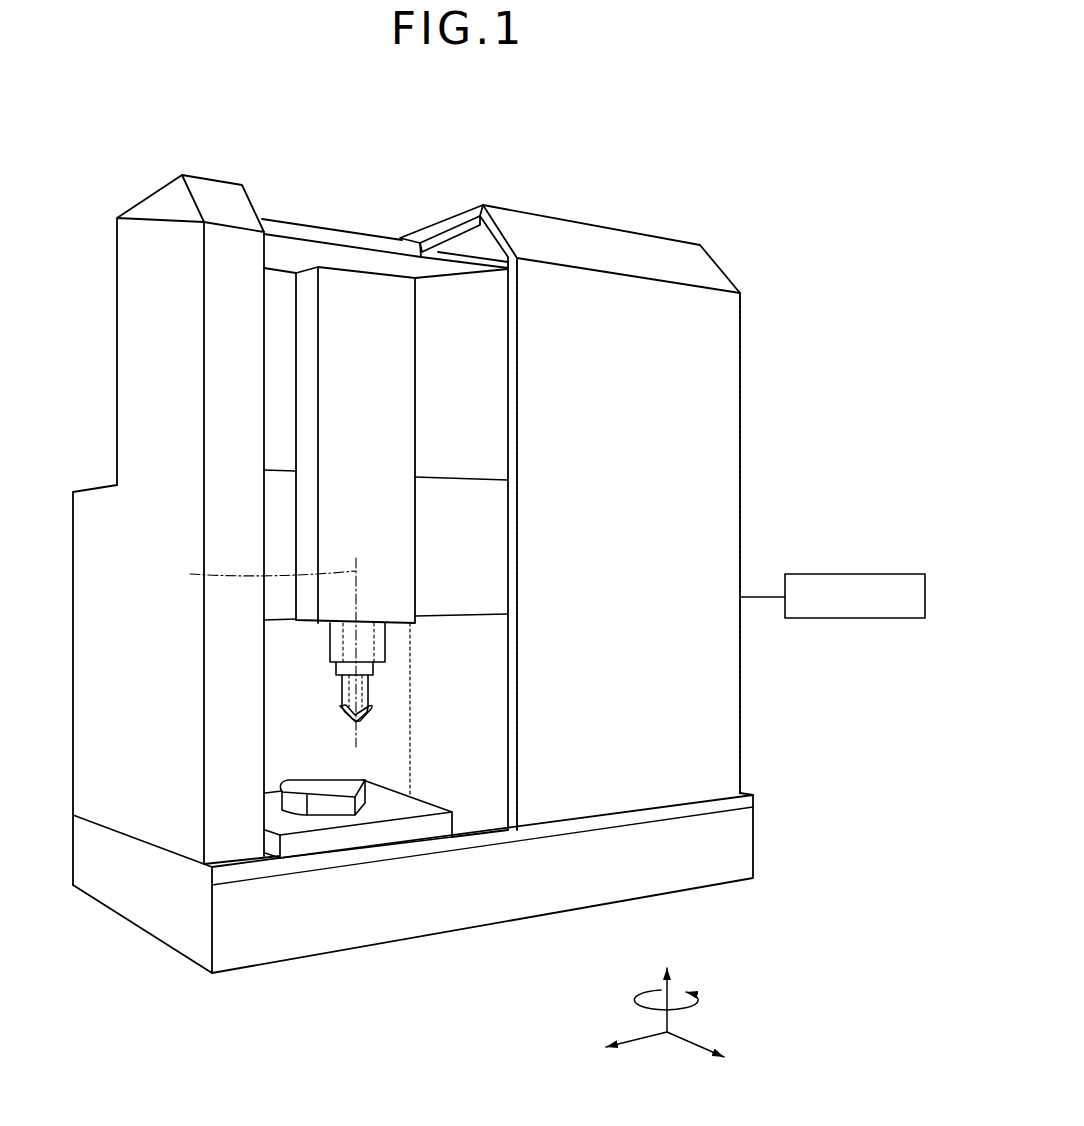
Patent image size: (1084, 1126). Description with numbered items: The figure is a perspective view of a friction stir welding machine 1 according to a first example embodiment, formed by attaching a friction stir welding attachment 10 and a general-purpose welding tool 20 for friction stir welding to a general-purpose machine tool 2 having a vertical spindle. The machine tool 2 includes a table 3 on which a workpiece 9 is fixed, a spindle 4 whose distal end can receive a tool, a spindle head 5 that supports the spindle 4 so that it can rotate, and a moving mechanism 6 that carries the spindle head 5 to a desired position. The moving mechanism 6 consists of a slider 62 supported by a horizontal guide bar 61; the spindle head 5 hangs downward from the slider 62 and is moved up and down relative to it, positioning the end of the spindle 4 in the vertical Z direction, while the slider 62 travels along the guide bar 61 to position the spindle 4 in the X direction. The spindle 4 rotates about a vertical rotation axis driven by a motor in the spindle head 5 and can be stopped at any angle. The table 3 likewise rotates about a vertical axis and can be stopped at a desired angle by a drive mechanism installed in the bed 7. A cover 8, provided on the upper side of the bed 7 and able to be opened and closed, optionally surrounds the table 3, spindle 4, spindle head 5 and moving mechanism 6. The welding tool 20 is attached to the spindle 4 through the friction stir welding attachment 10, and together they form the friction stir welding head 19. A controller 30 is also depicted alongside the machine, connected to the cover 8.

The friction stir welding machine 1 is at (628, 171).
The machine tool 2 is at (781, 345).
The table 3 is at (328, 838).
The spindle 4 is at (378, 670).
The spindle head 5 is at (368, 648).
The moving mechanism 6 is at (388, 447).
The guide bar 61 is at (473, 572).
The slider 62 is at (392, 520).
The bed 7 is at (732, 852).
The cover 8 is at (715, 717).
The workpiece 9 is at (284, 785).
The friction stir welding attachment 10 is at (338, 685).
The friction stir welding head 19 is at (143, 617).
The welding tool 20 is at (340, 717).
The controller 30 is at (845, 573).